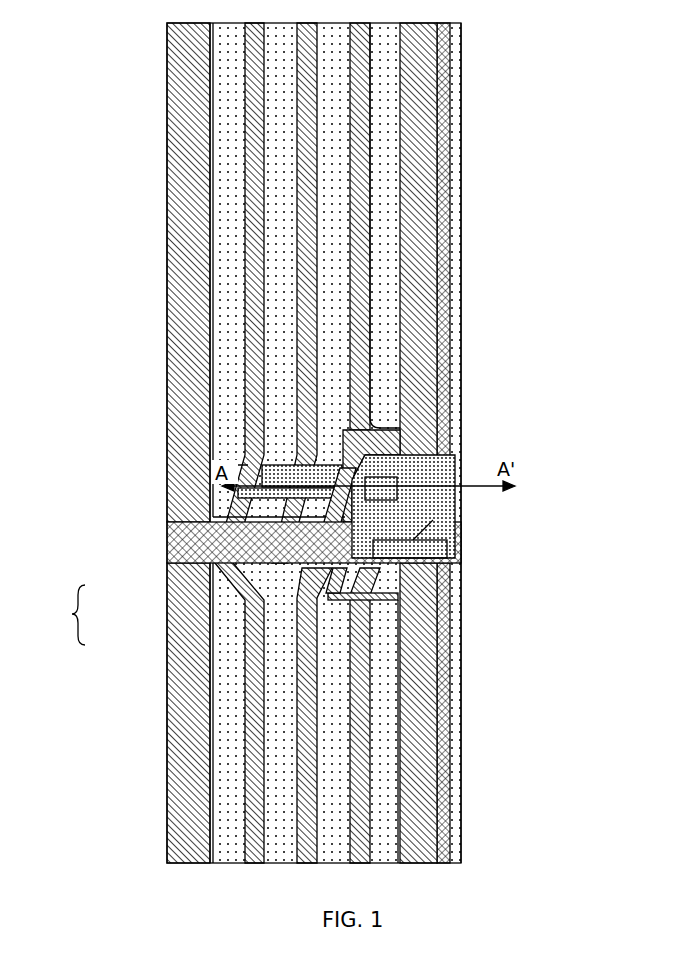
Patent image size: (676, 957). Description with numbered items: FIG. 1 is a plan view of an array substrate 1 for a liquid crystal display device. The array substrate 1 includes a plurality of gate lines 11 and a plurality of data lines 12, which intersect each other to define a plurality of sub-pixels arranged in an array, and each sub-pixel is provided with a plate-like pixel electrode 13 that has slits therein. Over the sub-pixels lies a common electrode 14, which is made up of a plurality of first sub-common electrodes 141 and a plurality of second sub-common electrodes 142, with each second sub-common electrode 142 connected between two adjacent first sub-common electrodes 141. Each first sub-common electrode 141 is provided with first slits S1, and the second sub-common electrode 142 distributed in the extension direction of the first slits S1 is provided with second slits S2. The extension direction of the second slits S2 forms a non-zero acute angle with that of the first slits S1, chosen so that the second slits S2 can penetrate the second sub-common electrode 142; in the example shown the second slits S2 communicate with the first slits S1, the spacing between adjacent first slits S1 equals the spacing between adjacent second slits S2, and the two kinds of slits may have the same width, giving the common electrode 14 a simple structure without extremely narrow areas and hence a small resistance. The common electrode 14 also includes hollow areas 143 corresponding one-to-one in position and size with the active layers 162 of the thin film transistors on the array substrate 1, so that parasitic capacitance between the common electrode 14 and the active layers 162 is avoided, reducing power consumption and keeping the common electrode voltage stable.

The array substrate 1 is at (128, 33).
The gate line 11 is at (168, 498).
The data line 12 is at (452, 386).
The plate-like pixel electrode 13 is at (233, 380).
The common electrode 14 is at (67, 615).
The first sub-common electrode 141 is at (235, 715).
The second sub-common electrode 142 is at (167, 567).
The hollow area 143 is at (462, 545).
The active layer 162 is at (460, 458).
The first slit S1 is at (295, 68).
The second slit S2 is at (268, 546).